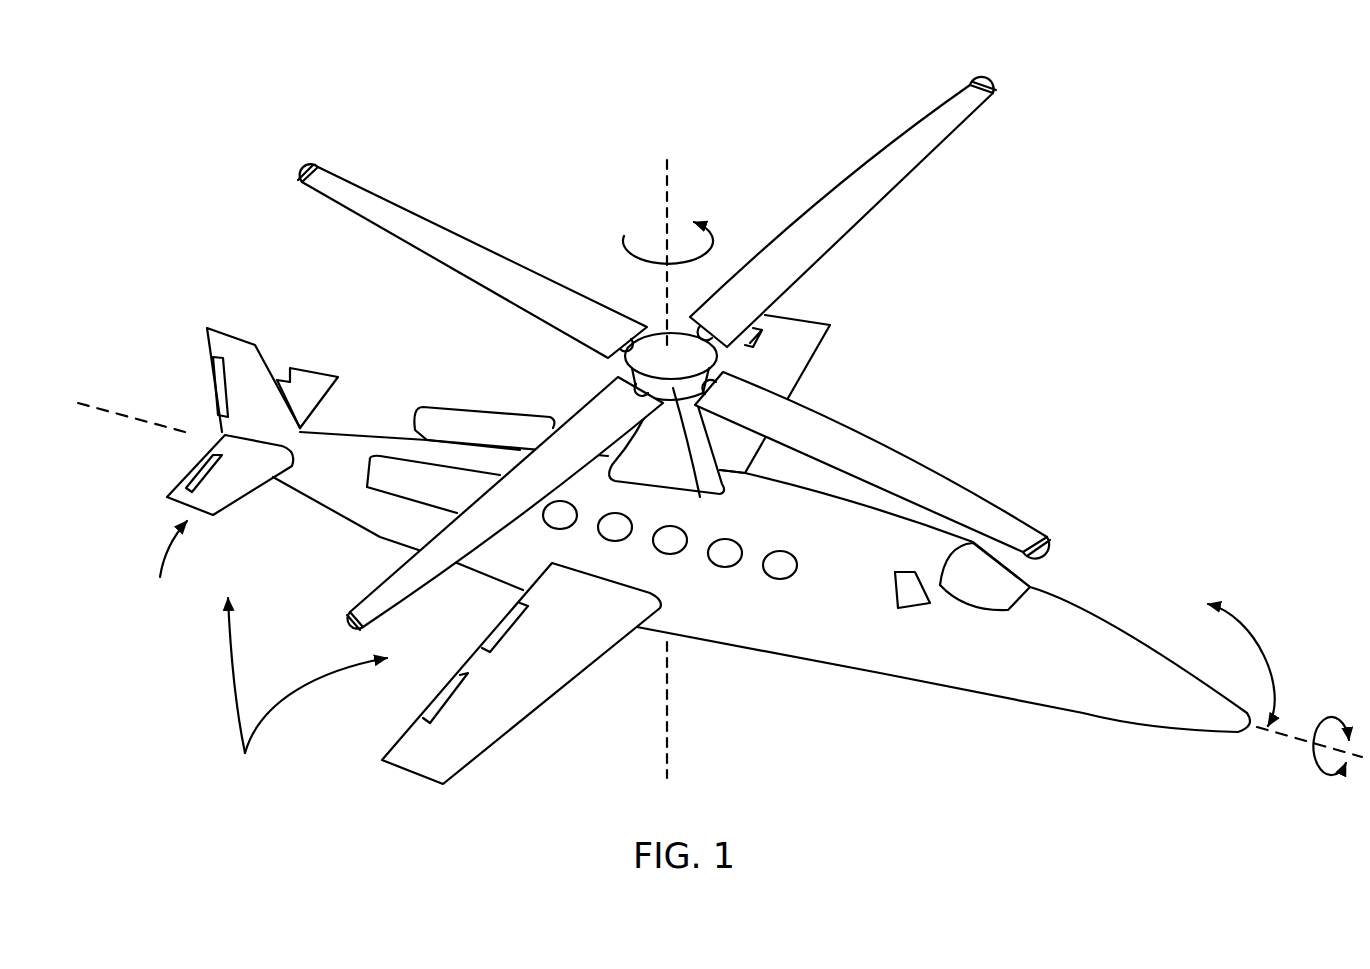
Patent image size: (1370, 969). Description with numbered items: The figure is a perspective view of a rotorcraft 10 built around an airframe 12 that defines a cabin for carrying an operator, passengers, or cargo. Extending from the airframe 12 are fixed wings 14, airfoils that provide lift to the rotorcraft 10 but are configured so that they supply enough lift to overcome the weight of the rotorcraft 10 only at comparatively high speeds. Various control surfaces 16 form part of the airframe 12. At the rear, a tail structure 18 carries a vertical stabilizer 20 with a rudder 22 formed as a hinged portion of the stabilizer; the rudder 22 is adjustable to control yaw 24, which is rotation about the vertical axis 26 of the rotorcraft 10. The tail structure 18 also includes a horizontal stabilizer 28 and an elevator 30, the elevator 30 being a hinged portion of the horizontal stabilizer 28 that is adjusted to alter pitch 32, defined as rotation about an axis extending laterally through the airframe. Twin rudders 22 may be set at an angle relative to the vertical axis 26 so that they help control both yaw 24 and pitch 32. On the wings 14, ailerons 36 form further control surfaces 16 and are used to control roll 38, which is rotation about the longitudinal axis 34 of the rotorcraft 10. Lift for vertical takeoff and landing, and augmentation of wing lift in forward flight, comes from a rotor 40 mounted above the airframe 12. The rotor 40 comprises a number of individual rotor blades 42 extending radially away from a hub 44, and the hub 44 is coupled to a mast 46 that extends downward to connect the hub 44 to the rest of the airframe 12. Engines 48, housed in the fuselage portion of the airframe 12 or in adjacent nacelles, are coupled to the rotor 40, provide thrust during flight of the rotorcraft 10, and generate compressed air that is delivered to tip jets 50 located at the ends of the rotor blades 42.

The rotorcraft 10 is at (1061, 337).
The airframe 12 is at (830, 650).
The fixed wing 14 is at (513, 712).
The control surfaces 16 is at (307, 693).
The tail structure 18 is at (167, 567).
The vertical stabilizer 20 is at (235, 350).
The rudder 22 is at (215, 386).
The yaw 24 is at (626, 232).
The vertical axis 26 is at (667, 176).
The horizontal stabilizer 28 is at (228, 486).
The elevator 30 is at (195, 472).
The pitch 32 is at (1262, 642).
The longitudinal axis 34 is at (1292, 737).
The aileron 36 is at (508, 622).
The roll 38 is at (1323, 778).
The rotor 40 is at (684, 314).
The rotor blade 42 is at (440, 228).
The hub 44 is at (700, 497).
The mast 46 is at (662, 452).
The engine 48 is at (467, 420).
The tip jet 50 is at (315, 163).